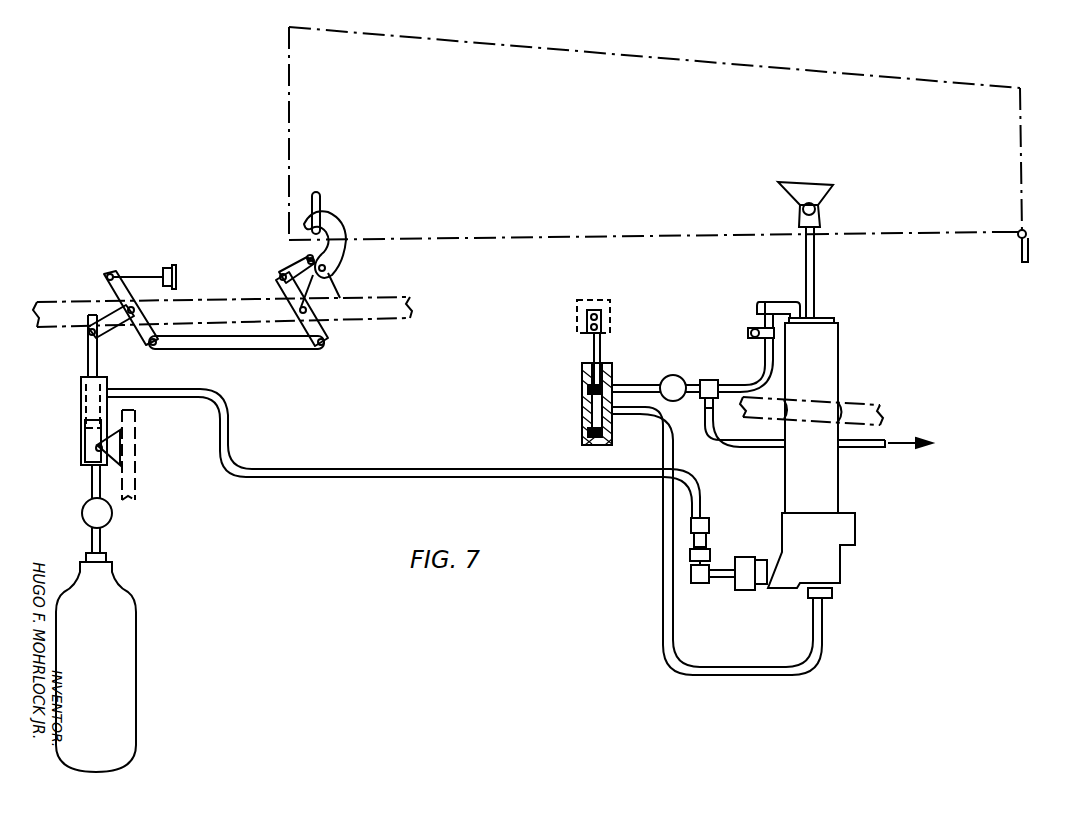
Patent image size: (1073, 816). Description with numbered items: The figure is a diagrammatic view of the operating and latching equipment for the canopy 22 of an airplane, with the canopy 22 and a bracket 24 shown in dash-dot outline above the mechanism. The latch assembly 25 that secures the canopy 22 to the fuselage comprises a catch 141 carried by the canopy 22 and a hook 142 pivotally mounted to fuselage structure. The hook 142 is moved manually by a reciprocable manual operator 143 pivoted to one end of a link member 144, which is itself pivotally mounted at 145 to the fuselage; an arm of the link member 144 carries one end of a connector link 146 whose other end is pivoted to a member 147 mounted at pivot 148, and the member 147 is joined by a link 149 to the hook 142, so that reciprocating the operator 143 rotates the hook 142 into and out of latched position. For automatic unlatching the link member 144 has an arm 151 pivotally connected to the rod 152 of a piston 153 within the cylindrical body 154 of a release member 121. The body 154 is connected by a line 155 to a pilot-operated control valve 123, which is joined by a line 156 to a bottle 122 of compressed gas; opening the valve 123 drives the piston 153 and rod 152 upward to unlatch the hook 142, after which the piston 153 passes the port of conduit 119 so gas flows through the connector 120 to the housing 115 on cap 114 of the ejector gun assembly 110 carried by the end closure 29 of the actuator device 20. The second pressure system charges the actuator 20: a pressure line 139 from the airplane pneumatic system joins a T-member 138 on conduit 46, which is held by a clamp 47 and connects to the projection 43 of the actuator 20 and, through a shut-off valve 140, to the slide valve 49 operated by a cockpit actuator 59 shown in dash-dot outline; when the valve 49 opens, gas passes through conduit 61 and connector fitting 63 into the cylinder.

The actuator device 20 is at (838, 373).
The canopy 22 is at (760, 50).
The bracket 24 is at (1020, 256).
The latch assembly 25 is at (346, 224).
The end closure 29 is at (848, 530).
The radially extending projection 43 is at (780, 300).
The pressure conduit 46 is at (752, 378).
The clamp means 47 is at (758, 326).
The slide valve member 49 is at (580, 374).
The actuator 59 is at (606, 302).
The pressure conduit 61 is at (662, 632).
The connector fitting 63 is at (834, 592).
The ejector or gun assembly 110 is at (756, 554).
The cap 114 is at (746, 586).
The housing or fitting 115 is at (722, 578).
The conduit 119 is at (452, 468).
The connector 120 is at (716, 556).
The release member 121 is at (80, 392).
The bottle 122 is at (134, 647).
The valving means 123 is at (112, 512).
The T-member 138 is at (710, 378).
The pressure line 139 is at (860, 449).
The shut-off valve 140 is at (672, 376).
The catch 141 is at (310, 205).
The hook 142 is at (326, 216).
The manual operator 143 is at (173, 264).
The link member 144 is at (106, 278).
The pivotal mounting 145 is at (172, 303).
The connector link 146 is at (248, 350).
The member 147 is at (330, 341).
The pivotal connection 148 is at (330, 302).
The link 149 is at (284, 266).
The arm 151 is at (106, 334).
The rod 152 is at (88, 358).
The piston 153 is at (82, 432).
The cylindrical body 154 is at (80, 447).
The line 155 is at (90, 474).
The line 156 is at (104, 548).